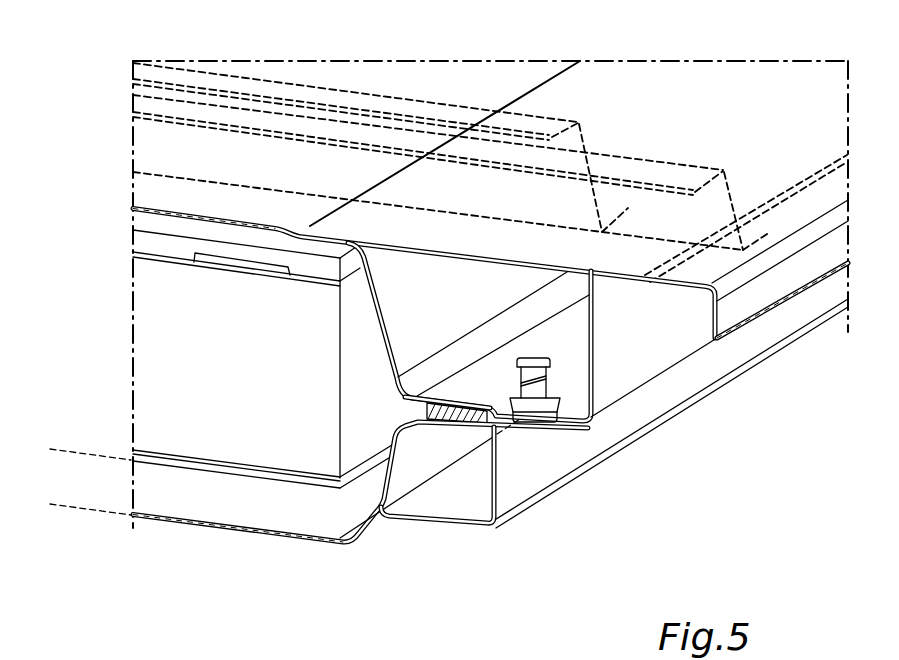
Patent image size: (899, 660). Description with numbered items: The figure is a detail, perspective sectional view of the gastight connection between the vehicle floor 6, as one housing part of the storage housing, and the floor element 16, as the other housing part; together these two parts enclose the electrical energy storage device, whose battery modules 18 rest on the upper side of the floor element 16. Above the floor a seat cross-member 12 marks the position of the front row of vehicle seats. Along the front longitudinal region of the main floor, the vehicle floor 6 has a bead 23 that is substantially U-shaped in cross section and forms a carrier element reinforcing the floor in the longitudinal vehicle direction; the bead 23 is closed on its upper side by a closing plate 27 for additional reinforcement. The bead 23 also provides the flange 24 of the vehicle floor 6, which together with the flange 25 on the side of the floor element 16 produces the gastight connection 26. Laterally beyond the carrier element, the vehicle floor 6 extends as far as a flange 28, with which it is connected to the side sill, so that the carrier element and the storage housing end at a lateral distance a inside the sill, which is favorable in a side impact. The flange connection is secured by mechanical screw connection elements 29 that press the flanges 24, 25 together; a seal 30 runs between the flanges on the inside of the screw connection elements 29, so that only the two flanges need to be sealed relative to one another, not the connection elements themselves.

The vehicle floor 6 is at (282, 220).
The seat cross-member 12 is at (236, 118).
The floor element 16 is at (264, 538).
The battery module 18 is at (122, 313).
The bead 23 is at (483, 384).
The flange 24 is at (420, 421).
The flange 25 is at (496, 505).
The gastight connection 26 is at (465, 382).
The closing plate 27 is at (598, 250).
The flange 28 is at (763, 298).
The screw connection element 29 is at (545, 448).
The seal 30 is at (440, 423).
The distance a is at (65, 452).